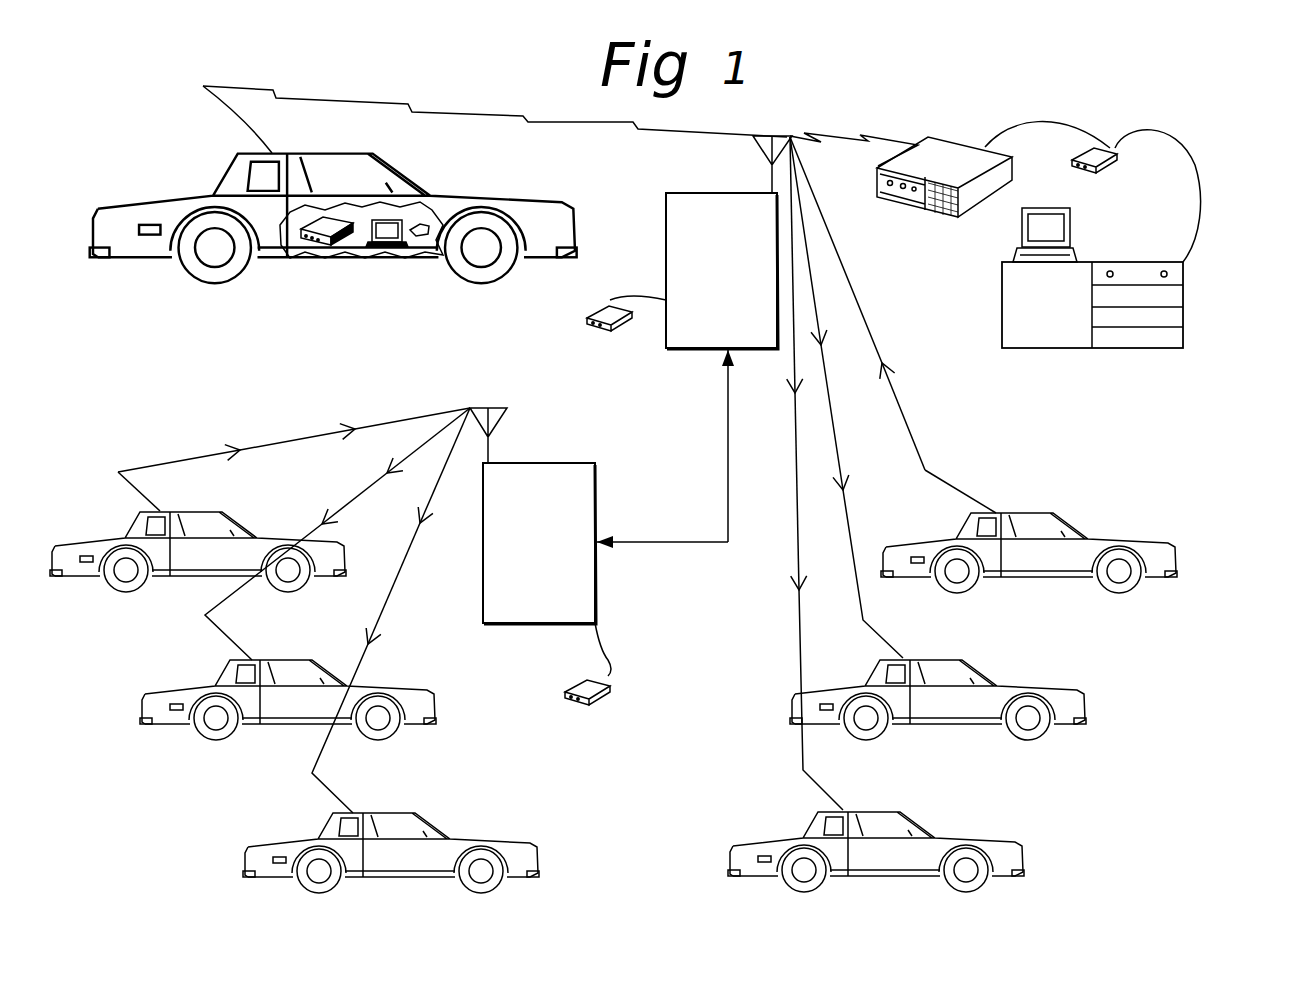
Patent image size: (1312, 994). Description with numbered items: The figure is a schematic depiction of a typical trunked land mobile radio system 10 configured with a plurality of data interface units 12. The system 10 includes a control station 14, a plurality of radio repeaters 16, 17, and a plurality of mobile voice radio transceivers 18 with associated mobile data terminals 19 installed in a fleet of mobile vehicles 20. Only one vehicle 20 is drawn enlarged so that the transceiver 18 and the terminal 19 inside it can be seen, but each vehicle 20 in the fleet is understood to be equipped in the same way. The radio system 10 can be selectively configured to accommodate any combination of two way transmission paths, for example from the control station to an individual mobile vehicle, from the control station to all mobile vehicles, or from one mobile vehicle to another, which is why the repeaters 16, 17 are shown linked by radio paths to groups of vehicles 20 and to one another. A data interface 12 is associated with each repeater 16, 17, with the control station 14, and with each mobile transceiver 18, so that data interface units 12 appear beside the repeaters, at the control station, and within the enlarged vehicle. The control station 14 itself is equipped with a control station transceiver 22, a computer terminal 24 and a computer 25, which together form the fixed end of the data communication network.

The trunked land mobile radio system 10 is at (1190, 707).
The data interface unit 12 is at (1095, 170).
The control station 14 is at (1070, 374).
The radio repeater 16 is at (776, 193).
The radio repeater 17 is at (598, 474).
The mobile voice radio transceiver 18 is at (310, 247).
The mobile data terminal 19 is at (377, 256).
The mobile vehicle 20 is at (137, 193).
The control station transceiver 22 is at (876, 158).
The computer terminal 24 is at (1021, 222).
The computer 25 is at (1126, 328).